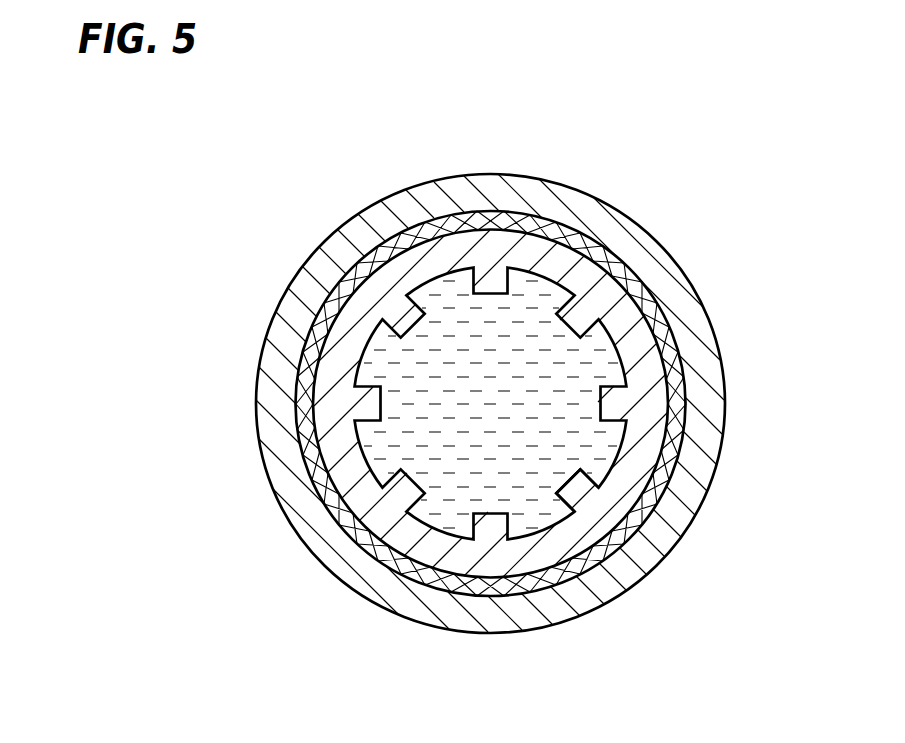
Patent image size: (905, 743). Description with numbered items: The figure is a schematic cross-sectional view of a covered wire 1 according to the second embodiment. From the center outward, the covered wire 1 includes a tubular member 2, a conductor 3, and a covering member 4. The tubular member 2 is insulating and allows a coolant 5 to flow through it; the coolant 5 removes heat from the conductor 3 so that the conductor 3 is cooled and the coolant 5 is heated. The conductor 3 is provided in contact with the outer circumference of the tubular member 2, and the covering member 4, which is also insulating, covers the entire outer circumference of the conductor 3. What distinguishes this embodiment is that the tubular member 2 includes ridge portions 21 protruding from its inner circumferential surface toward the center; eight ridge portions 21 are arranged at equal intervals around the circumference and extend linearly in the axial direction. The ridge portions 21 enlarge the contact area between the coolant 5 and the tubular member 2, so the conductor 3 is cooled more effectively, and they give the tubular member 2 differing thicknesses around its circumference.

The covered wire 1 is at (702, 192).
The tubular member 2 is at (647, 432).
The ridge portion 21 is at (585, 469).
The conductor 3 is at (675, 368).
The covering member 4 is at (650, 270).
The coolant 5 is at (520, 475).